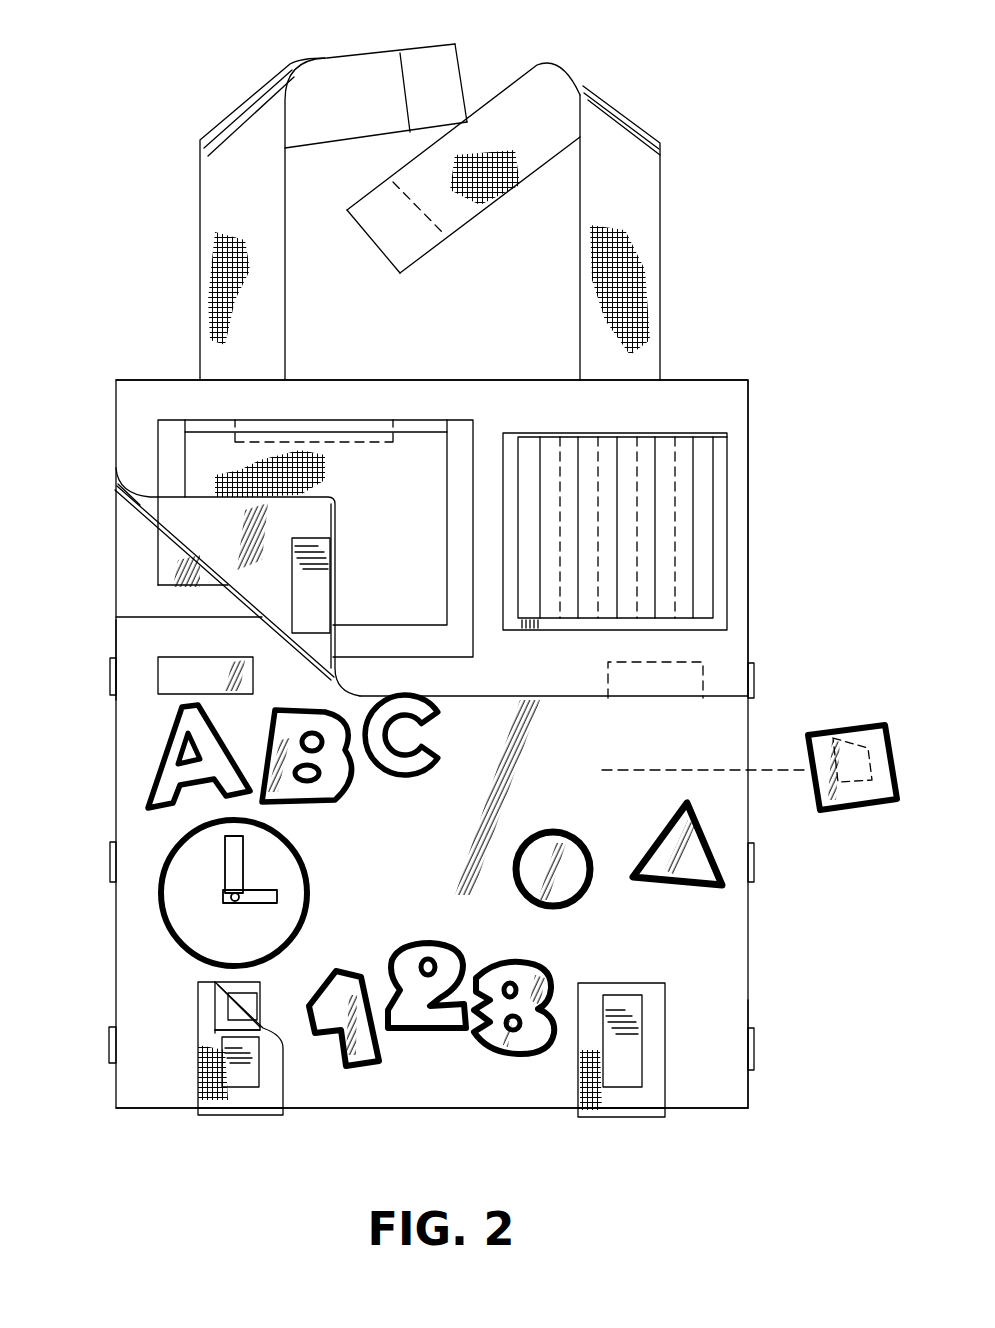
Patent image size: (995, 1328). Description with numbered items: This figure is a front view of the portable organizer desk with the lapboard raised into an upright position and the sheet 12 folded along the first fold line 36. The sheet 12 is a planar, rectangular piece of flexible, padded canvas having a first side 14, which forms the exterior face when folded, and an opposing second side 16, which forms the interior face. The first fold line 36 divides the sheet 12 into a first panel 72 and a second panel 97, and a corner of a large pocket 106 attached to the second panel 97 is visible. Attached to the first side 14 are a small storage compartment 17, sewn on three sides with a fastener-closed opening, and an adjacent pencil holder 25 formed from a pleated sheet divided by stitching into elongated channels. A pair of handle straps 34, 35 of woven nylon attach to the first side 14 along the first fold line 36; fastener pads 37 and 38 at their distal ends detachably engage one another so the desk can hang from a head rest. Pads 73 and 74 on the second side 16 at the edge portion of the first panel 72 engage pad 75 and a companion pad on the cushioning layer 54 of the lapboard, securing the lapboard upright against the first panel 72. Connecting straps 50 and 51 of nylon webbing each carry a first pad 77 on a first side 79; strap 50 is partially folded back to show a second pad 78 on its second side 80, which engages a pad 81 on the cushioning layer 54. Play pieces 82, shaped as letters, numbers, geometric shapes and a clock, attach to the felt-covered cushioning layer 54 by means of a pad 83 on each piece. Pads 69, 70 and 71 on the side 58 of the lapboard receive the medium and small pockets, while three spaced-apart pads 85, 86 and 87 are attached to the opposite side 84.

The sheet 12 is at (150, 488).
The first side 14 is at (740, 620).
The second side 16 is at (310, 505).
The small storage compartment 17 is at (157, 420).
The pencil holder 25 is at (727, 437).
The handle strap 34 is at (214, 238).
The handle strap 35 is at (643, 267).
The first fold line 36 is at (700, 378).
The fastener pad 37 is at (437, 62).
The fastener pad 38 is at (380, 231).
The connecting strap 50 is at (201, 1112).
The connecting strap 51 is at (627, 1112).
The cushioning layer 54 is at (383, 874).
The side 58 is at (748, 1090).
The pad 69 is at (754, 684).
The pad 70 is at (754, 862).
The pad 71 is at (754, 1048).
The first panel 72 is at (728, 551).
The pad 73 is at (330, 566).
The pad 74 is at (612, 668).
The pad 75 is at (222, 661).
The first pad 77 is at (245, 1078).
The second pad 78 is at (210, 1002).
The first side 79 is at (270, 1093).
The second side 80 is at (227, 1022).
The pad 81 is at (255, 995).
The play pieces 82 is at (170, 745).
The pad 83 is at (860, 748).
The side 84 is at (115, 640).
The pad 85 is at (109, 1045).
The pad 86 is at (112, 857).
The pad 87 is at (112, 672).
The second panel 97 is at (130, 528).
The large pocket 106 is at (172, 568).